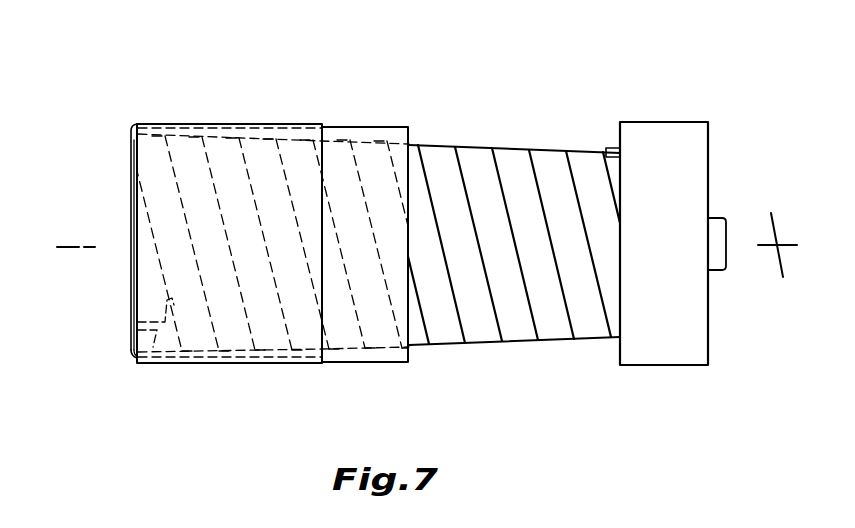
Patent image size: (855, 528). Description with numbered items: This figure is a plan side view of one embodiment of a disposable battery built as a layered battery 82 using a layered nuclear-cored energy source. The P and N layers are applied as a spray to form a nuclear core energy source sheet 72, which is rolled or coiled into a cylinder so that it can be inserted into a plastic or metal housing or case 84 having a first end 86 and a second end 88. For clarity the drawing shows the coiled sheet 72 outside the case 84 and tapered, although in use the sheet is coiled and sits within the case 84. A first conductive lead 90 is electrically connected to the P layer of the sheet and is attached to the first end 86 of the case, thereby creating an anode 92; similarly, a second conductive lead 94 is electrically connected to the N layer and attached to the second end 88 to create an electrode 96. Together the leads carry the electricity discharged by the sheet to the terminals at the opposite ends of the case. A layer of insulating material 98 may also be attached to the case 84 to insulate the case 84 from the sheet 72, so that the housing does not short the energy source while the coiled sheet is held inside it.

The layered battery 82 is at (106, 79).
The case 84 is at (213, 133).
The first end 86 is at (662, 123).
The second end 88 is at (137, 360).
The first conductive lead 90 is at (618, 147).
The anode 92 is at (720, 218).
The second conductive lead 94 is at (154, 352).
The electrode 96 is at (130, 159).
The layer of insulating material 98 is at (352, 127).
The sheet 72 is at (455, 124).